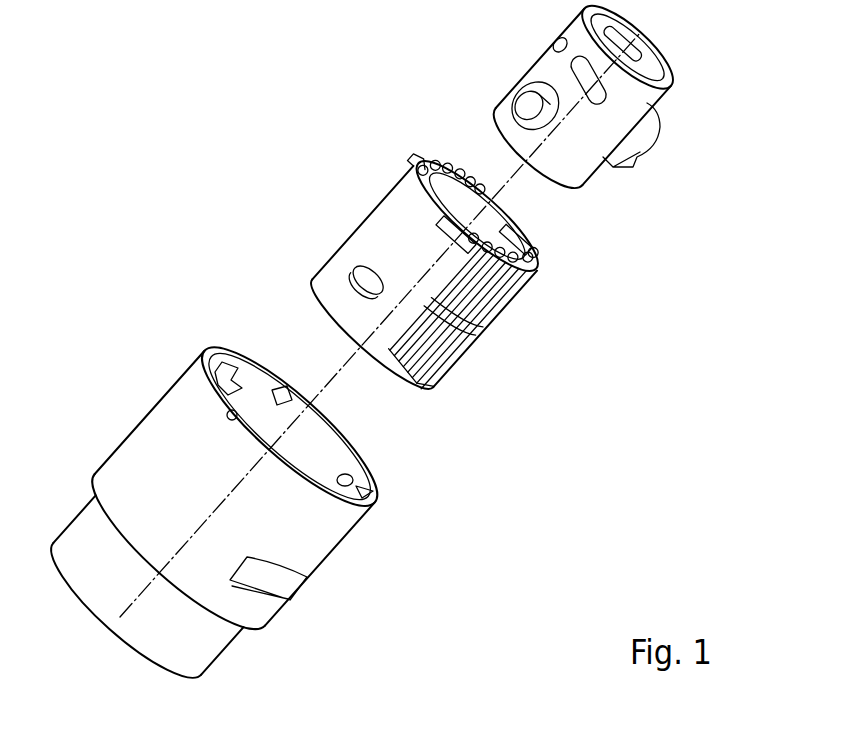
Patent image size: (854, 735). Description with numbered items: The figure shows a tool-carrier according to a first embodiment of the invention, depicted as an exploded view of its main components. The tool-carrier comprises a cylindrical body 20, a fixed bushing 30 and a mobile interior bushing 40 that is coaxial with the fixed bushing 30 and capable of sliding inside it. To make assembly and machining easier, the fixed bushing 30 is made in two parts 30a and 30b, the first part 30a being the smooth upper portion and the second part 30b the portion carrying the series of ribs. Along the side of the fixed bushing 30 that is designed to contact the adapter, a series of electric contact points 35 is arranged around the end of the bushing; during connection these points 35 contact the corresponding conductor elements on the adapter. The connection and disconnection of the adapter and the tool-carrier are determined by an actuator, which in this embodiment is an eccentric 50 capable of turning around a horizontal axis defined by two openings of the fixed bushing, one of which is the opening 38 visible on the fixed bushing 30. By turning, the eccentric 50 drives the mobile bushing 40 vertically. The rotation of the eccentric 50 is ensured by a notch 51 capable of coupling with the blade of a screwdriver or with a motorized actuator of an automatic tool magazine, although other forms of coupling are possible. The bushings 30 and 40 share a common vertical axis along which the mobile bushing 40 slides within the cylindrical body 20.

The cylindrical body 20 is at (305, 532).
The fixed bushing 30 is at (460, 292).
The part of the fixed bushing 30a is at (398, 210).
The part of the fixed bushing 30b is at (407, 383).
The electric contact points 35 is at (537, 253).
The opening 38 is at (372, 282).
The mobile interior bushing 40 is at (611, 100).
The eccentric 50 is at (517, 80).
The notch 51 is at (637, 152).